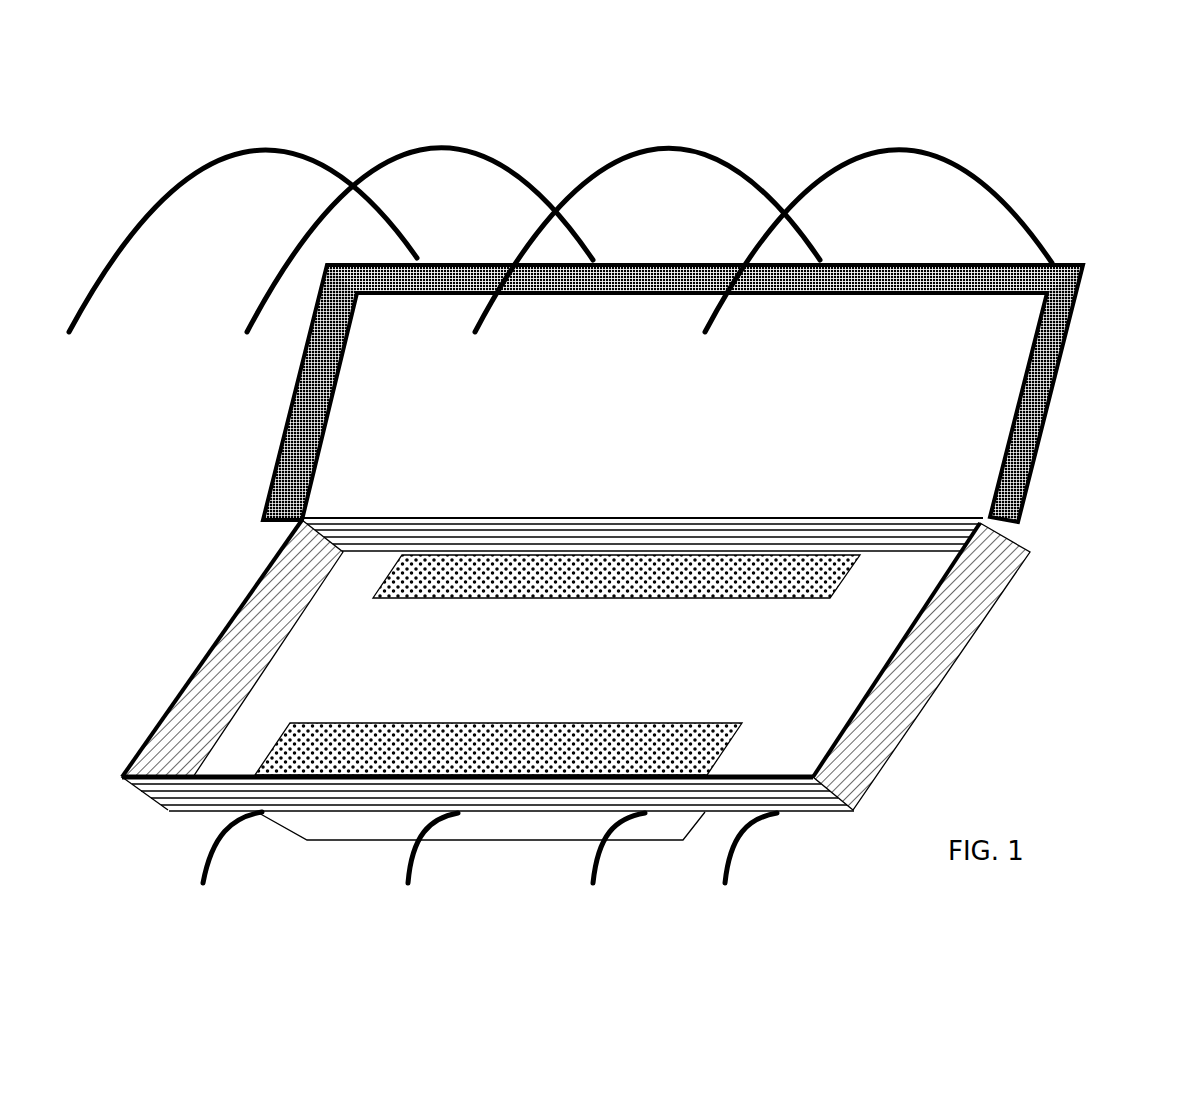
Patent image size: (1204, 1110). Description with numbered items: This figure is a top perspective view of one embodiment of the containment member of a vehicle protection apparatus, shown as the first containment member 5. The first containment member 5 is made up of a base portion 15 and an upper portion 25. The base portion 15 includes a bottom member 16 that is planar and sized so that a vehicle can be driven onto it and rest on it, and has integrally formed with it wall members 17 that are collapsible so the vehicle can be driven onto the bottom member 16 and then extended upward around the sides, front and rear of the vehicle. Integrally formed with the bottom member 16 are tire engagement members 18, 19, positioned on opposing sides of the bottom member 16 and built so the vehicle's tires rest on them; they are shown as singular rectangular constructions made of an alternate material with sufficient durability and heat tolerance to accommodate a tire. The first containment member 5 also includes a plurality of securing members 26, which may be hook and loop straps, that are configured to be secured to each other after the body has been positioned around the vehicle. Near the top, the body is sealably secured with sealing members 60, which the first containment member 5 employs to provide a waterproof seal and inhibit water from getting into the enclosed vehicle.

The first containment member 5 is at (983, 266).
The base portion 15 is at (919, 672).
The bottom member 16 is at (310, 645).
The wall members 17 is at (941, 530).
The tire engagement member 18 is at (413, 572).
The tire engagement member 19 is at (645, 572).
The upper portion 25 is at (1053, 337).
The securing members 26 is at (477, 152).
The sealing members 60 is at (317, 403).